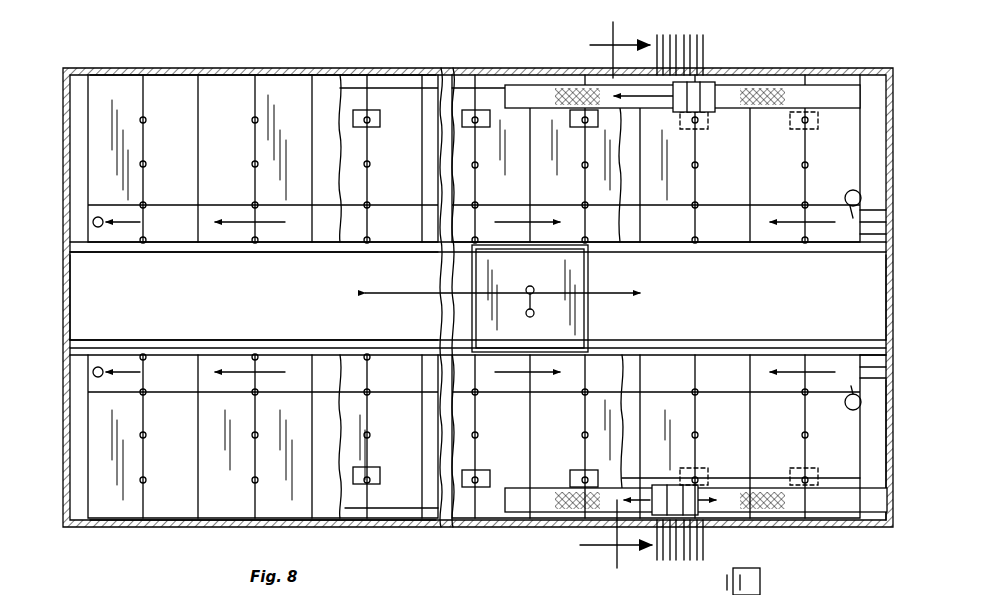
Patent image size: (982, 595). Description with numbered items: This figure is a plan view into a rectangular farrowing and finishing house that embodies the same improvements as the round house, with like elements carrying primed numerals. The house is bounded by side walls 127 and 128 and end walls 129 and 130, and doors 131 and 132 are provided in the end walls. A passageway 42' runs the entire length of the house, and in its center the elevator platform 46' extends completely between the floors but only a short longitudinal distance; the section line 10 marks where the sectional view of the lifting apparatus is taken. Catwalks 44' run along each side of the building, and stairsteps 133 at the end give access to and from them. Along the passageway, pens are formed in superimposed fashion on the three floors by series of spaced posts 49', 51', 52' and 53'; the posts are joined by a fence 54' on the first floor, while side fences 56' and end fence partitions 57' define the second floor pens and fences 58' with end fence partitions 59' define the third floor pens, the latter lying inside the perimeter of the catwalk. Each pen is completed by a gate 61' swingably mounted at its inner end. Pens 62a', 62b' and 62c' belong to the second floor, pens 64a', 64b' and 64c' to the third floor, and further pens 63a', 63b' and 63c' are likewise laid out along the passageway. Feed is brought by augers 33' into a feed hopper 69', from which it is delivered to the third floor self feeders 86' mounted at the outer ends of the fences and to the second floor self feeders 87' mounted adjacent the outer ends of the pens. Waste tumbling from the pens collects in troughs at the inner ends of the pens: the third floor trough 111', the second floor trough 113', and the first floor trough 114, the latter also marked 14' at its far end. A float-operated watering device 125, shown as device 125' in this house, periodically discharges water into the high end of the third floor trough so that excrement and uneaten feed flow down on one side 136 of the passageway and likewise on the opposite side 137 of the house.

The section line 10- 10 is at (602, 307).
The compartment 14' is at (189, 222).
The auger 33' is at (753, 33).
The passageway 42' is at (478, 298).
The catwalk 44' is at (696, 298).
The elevator platform 46' is at (502, 298).
The post 49' is at (461, 401).
The post 51' is at (263, 158).
The post 52' is at (255, 152).
The post 53' is at (255, 109).
The fence 54' is at (255, 179).
The side fence 56' is at (387, 158).
The end fence partition 57' is at (448, 58).
The fence 58' is at (656, 158).
The end fence partition 59' is at (722, 139).
The gate 61' is at (236, 268).
The pen 62a' is at (288, 158).
The pen 62b' is at (230, 158).
The pen 62c' is at (155, 158).
The compartment 63a' is at (572, 271).
The compartment 63b' is at (488, 267).
The compartment 63c' is at (391, 342).
The pen 64a' is at (817, 280).
The pen 64b' is at (773, 310).
The pen 64c' is at (696, 275).
The feed hopper 69' is at (725, 73).
The self feeder 86' is at (742, 499).
The self feeder 87' is at (656, 436).
The third floor trough 111' is at (692, 298).
The second floor trough 113' is at (379, 348).
The first floor trough 114 is at (263, 436).
The float-operated watering device 125 is at (825, 368).
The watering device 125' is at (794, 363).
The side wall 127 is at (331, 74).
The side wall 128 is at (165, 522).
The end wall 129 is at (66, 522).
The end wall 130 is at (892, 520).
The door 131 is at (70, 304).
The door 132 is at (886, 295).
The stairsteps 133 is at (870, 246).
The side of the passageway 136 is at (365, 256).
The opposite side of the house 137 is at (355, 328).